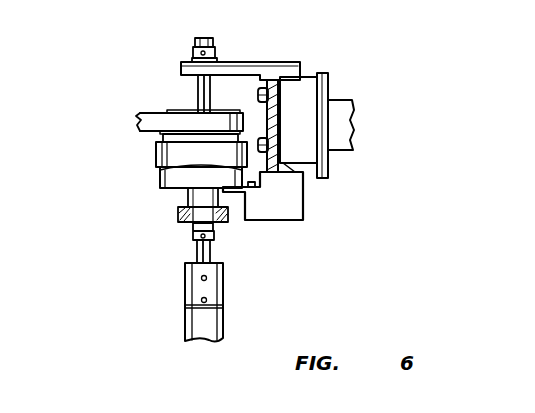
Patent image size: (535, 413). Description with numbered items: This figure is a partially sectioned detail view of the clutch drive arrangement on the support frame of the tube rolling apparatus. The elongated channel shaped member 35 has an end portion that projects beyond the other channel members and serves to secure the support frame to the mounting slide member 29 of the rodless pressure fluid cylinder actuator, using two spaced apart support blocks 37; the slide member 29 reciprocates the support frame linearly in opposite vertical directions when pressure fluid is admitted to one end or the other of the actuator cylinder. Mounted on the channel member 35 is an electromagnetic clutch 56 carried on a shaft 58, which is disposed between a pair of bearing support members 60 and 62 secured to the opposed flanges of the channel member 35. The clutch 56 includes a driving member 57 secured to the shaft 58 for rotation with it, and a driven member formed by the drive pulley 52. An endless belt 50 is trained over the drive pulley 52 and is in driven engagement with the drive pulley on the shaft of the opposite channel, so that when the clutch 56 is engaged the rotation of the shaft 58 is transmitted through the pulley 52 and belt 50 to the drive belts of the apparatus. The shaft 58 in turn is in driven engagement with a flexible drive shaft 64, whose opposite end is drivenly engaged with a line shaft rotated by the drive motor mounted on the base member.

The mounting slide member 29 is at (325, 164).
The channel shaped member 35 is at (272, 122).
The support block 37 is at (305, 137).
The endless belt 50 is at (137, 123).
The drive pulley 52 is at (185, 110).
The electromagnetic clutch 56 is at (150, 160).
The driving member 57 is at (193, 157).
The shaft 58 is at (211, 82).
The bearing support member 60 is at (195, 50).
The bearing support member 62 is at (258, 205).
The flexible drive shaft 64 is at (193, 323).